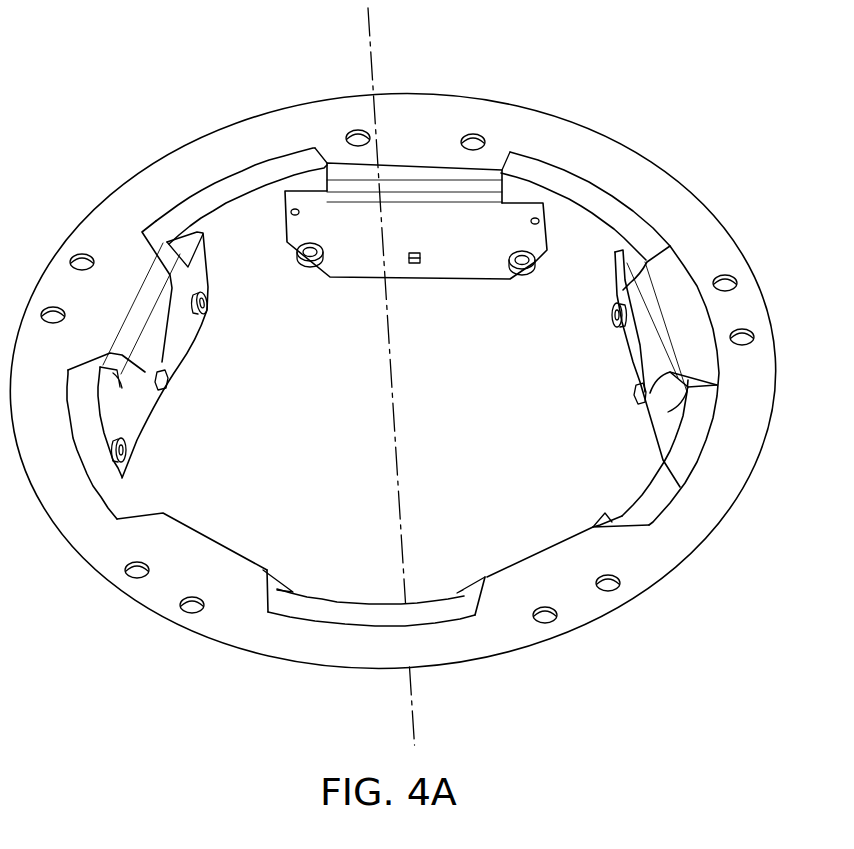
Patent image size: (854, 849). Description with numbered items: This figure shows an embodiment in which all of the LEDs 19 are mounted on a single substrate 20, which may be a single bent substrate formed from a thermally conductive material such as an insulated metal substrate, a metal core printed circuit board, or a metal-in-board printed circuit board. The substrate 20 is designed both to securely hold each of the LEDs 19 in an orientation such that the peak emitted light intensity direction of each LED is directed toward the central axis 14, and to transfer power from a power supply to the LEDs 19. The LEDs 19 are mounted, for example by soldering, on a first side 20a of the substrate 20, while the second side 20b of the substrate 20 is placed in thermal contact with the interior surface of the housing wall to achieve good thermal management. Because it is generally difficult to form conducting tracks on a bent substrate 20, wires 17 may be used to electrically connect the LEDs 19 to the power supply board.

The central axis 14 is at (371, 32).
The wires 17 is at (428, 245).
The LEDs 19 is at (418, 267).
The substrate 20 is at (653, 165).
The first side 20a is at (473, 272).
The second side 20b is at (547, 228).